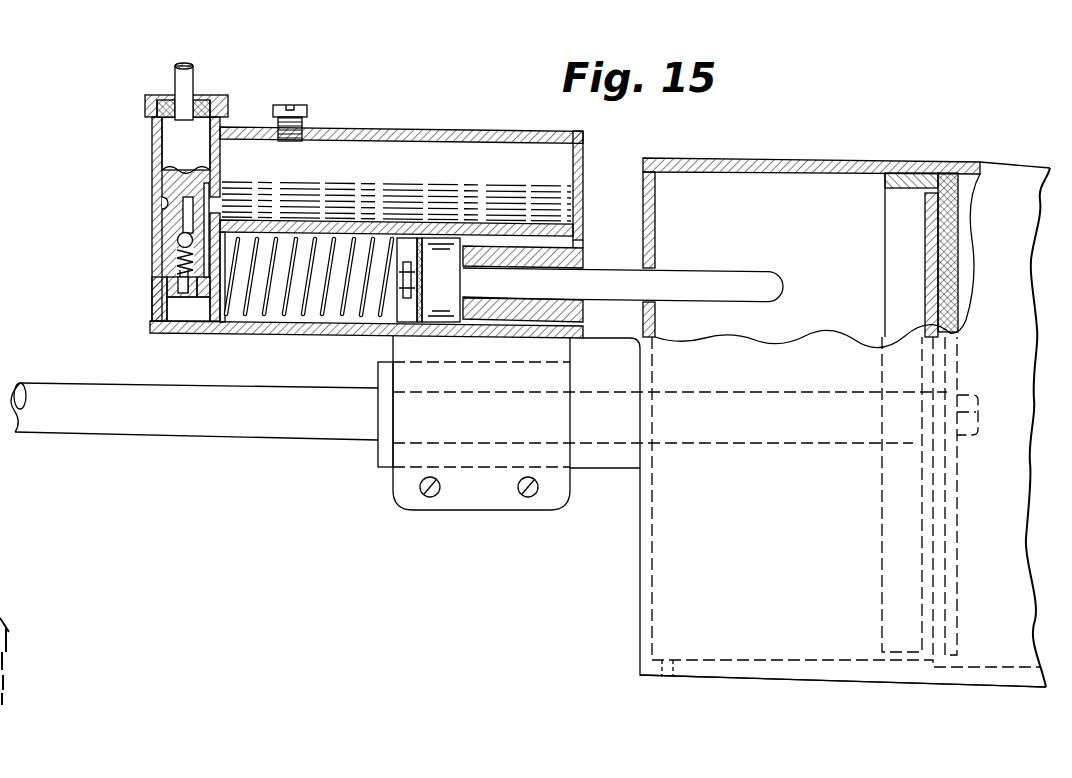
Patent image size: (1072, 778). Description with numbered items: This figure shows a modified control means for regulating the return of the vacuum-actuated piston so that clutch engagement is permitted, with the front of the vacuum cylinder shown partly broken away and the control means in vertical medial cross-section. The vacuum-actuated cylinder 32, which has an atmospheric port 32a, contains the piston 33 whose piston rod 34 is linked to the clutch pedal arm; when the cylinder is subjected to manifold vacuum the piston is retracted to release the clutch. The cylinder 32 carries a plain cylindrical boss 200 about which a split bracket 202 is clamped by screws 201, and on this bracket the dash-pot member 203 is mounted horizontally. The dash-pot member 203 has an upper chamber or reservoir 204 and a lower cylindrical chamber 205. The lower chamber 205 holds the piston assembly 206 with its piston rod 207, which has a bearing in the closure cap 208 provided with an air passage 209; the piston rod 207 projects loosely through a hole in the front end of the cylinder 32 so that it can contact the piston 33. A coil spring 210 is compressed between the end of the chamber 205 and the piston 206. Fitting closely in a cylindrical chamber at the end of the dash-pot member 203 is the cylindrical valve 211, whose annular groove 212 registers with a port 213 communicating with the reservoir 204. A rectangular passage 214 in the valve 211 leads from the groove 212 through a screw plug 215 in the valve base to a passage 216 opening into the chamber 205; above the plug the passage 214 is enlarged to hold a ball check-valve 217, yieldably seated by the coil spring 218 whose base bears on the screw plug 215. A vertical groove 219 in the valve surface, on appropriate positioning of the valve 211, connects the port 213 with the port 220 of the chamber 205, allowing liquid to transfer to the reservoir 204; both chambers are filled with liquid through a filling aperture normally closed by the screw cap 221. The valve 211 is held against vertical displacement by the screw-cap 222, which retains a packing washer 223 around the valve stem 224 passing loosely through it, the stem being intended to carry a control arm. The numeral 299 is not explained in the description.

The vacuum-actuated cylinder 32 is at (712, 668).
The atmospheric port 32a is at (666, 676).
The piston 33 is at (950, 510).
The piston rod 34 is at (130, 400).
The cylindrical boss 200 is at (603, 462).
The screws 201 is at (424, 496).
The split bracket 202 is at (420, 432).
The dash-pot member 203 is at (468, 126).
The upper chamber 204 is at (382, 141).
The lower cylindrical chamber 205 is at (258, 325).
The piston assembly 206 is at (435, 325).
The piston rod 207 is at (686, 272).
The closure cap 208 is at (592, 318).
The air passage 209 is at (490, 330).
The coil spring 210 is at (328, 302).
The cylindrical valve 211 is at (170, 150).
The annular groove 212 is at (160, 203).
The port 213 is at (213, 205).
The rectangular passage 214 is at (178, 238).
The screw plug 215 is at (167, 290).
The passage 216 is at (173, 310).
The ball check-valve 217 is at (172, 258).
The coil spring 218 is at (195, 272).
The vertical groove 219 is at (185, 215).
The port 220 is at (222, 262).
The screw cap 221 is at (290, 108).
The screw-cap 222 is at (150, 108).
The packing washer 223 is at (155, 130).
The valve stem 224 is at (190, 88).
The cylinder end wall 299 is at (583, 240).